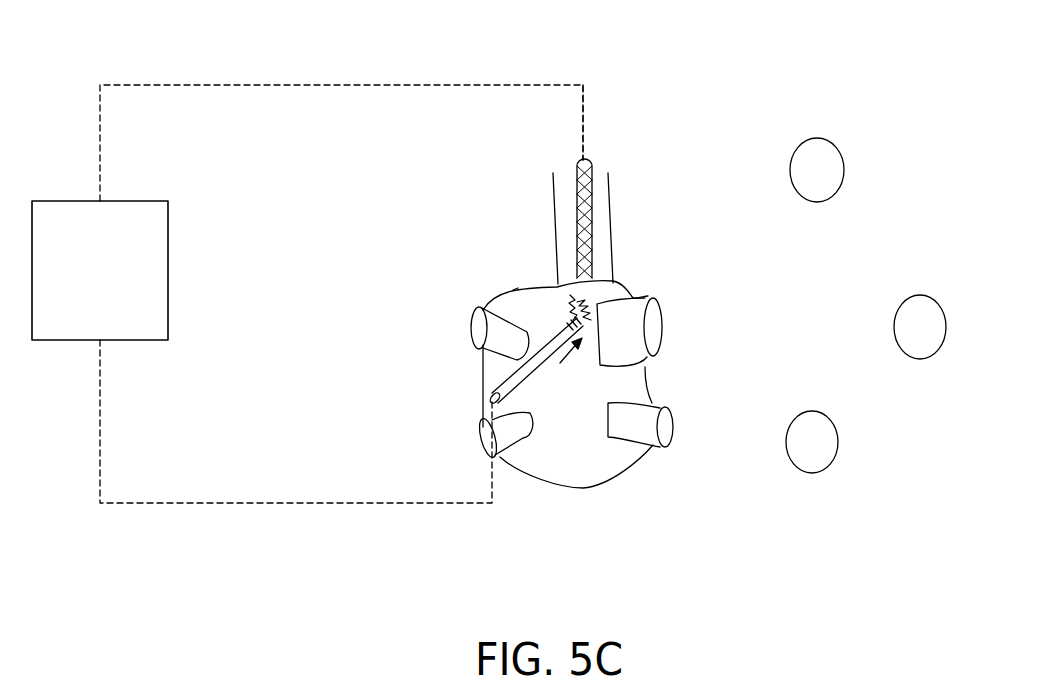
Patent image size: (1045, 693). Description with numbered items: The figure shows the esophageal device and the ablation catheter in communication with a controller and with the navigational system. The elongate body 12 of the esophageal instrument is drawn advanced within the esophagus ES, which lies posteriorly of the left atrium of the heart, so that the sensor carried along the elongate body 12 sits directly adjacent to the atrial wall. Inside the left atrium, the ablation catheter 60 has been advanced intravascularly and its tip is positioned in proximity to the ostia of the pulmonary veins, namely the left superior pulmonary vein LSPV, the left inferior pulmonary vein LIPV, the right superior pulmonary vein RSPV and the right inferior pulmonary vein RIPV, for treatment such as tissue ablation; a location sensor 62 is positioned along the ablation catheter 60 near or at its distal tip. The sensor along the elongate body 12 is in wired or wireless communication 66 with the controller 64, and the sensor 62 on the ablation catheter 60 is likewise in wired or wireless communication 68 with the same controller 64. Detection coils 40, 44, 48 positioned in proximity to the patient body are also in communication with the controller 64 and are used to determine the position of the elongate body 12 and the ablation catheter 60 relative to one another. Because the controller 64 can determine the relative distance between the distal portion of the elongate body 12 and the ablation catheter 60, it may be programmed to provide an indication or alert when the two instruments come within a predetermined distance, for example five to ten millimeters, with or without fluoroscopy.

The elongate body 12 is at (592, 230).
The detection coil 40 is at (821, 165).
The detection coil 44 is at (920, 295).
The detection coil 48 is at (822, 445).
The ablation catheter 60 is at (553, 363).
The location sensor 62 is at (573, 316).
The controller 64 is at (67, 200).
The wired or wireless communication 66 is at (286, 85).
The wired or wireless communication 68 is at (178, 504).
The esophagus ES is at (611, 207).
The right superior pulmonary vein RSPV is at (476, 330).
The left superior pulmonary vein LSPV is at (655, 333).
The right inferior pulmonary vein RIPV is at (483, 436).
The left inferior pulmonary vein LIPV is at (670, 432).